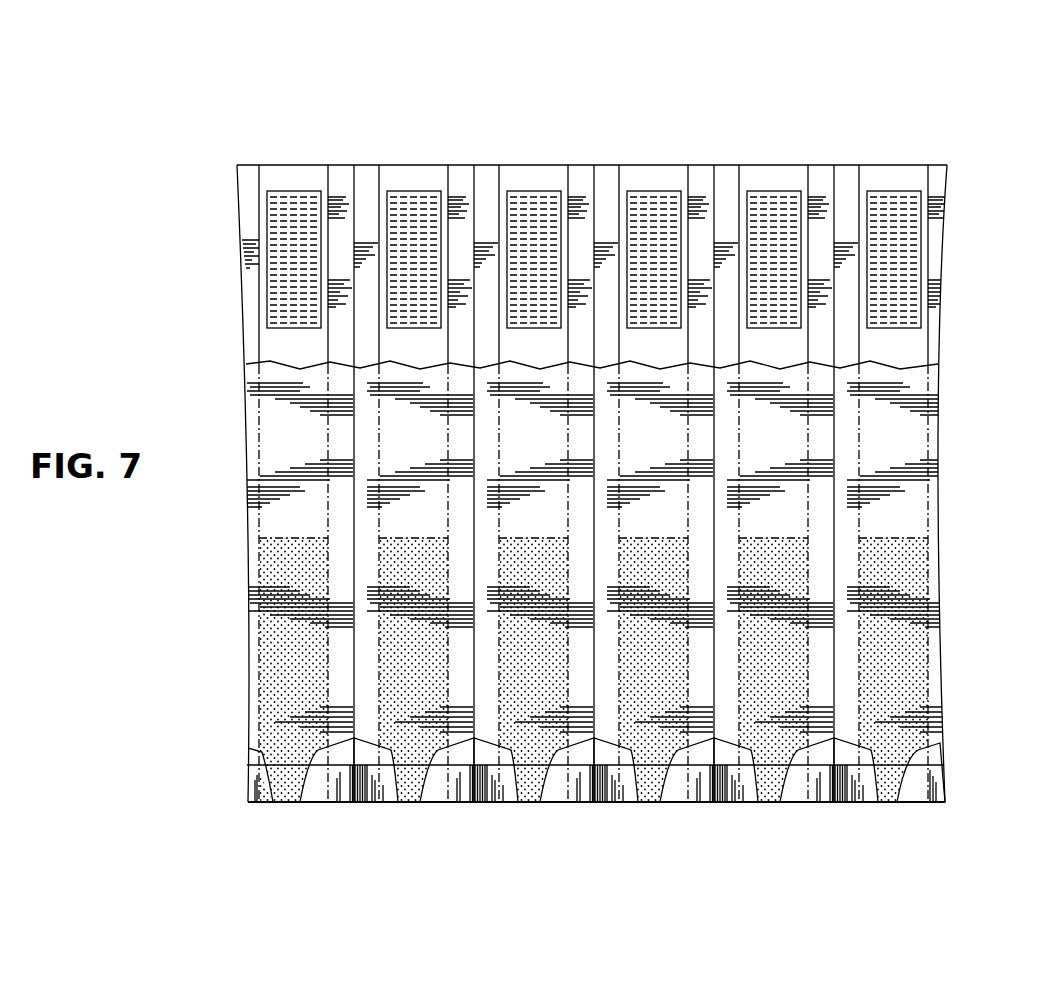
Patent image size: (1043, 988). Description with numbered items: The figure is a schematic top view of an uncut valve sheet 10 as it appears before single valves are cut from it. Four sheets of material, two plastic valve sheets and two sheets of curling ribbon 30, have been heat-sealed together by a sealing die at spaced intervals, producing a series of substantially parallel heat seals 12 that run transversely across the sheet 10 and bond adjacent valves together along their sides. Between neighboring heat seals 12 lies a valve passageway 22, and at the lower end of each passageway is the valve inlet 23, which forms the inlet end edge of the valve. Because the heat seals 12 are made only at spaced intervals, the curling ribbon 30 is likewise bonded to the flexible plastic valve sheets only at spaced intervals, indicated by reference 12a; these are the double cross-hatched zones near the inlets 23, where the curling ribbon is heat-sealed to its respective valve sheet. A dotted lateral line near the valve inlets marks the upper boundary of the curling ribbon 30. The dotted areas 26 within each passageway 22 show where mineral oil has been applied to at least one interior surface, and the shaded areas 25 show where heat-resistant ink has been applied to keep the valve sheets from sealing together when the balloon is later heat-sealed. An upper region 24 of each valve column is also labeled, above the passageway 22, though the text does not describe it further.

The valve sheet 10 is at (225, 695).
The heat seals 12 is at (366, 175).
The spaced heat-seal intervals of curling ribbon 12a is at (368, 802).
The valve passageway 22 is at (911, 360).
The valve inlet 23 is at (287, 808).
The upper column regions 24 is at (297, 153).
The shaded areas of heat-resistant ink 25 is at (911, 676).
The dotted areas of mineral oil 26 is at (280, 200).
The curling ribbon 30 is at (307, 805).